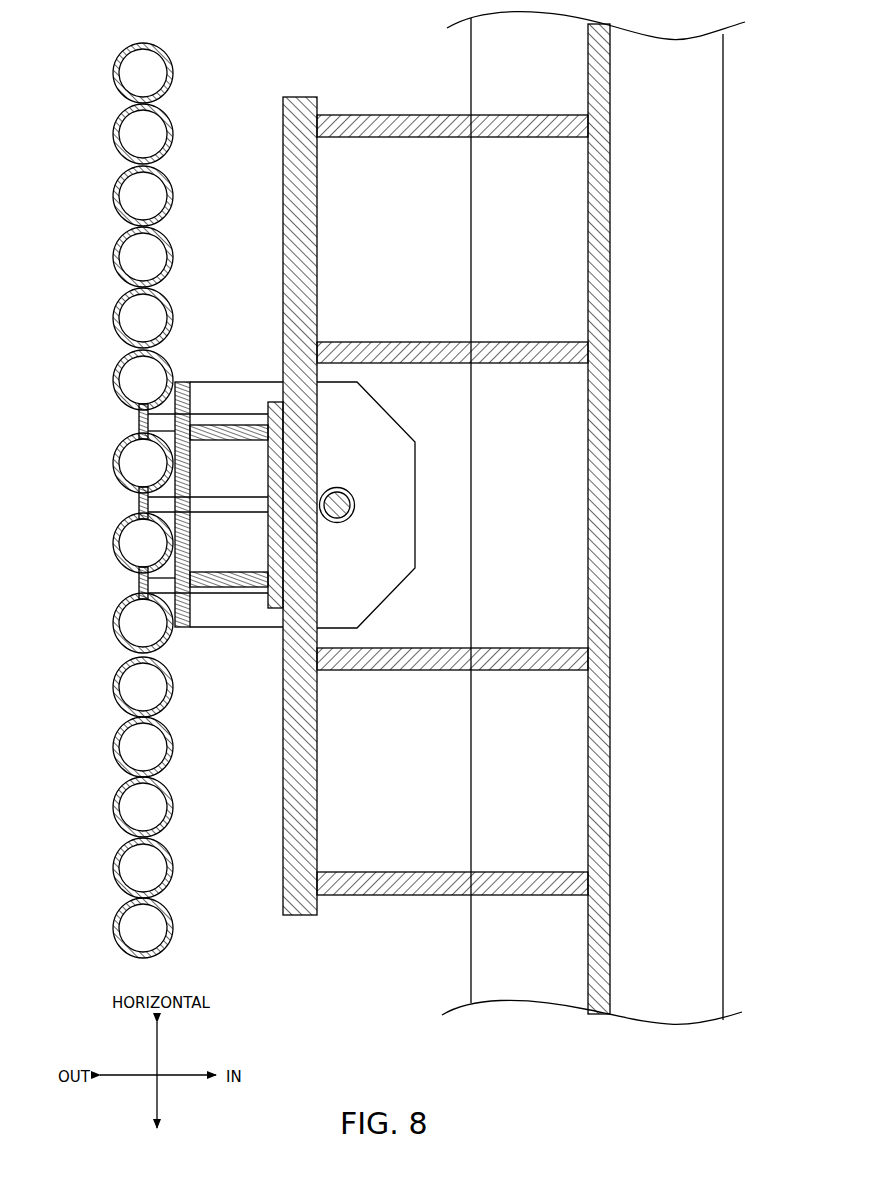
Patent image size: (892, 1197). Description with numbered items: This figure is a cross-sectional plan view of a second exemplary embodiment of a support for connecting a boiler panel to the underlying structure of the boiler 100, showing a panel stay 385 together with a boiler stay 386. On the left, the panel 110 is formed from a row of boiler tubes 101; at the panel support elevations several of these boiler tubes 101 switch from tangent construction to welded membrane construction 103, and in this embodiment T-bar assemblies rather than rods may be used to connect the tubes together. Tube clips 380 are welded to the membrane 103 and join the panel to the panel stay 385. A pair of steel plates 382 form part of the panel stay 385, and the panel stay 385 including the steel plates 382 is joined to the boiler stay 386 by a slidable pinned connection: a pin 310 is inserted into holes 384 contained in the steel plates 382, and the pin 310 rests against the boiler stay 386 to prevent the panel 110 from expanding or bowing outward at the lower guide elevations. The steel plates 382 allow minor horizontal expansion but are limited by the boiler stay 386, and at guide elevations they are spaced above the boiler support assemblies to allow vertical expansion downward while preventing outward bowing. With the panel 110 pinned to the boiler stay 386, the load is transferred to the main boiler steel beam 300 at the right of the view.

The boiler 100 is at (731, 400).
The boiler tubes 101 is at (114, 258).
The welded membrane construction 103 is at (128, 424).
The panel 110 is at (95, 500).
The main boiler steel beam 300 is at (724, 568).
The pin 310 is at (359, 532).
The tube clips 380 is at (231, 423).
The steel plates 382 is at (384, 430).
The holes 384 is at (345, 530).
The panel stay 385 is at (245, 311).
The boiler stay 386 is at (355, 83).